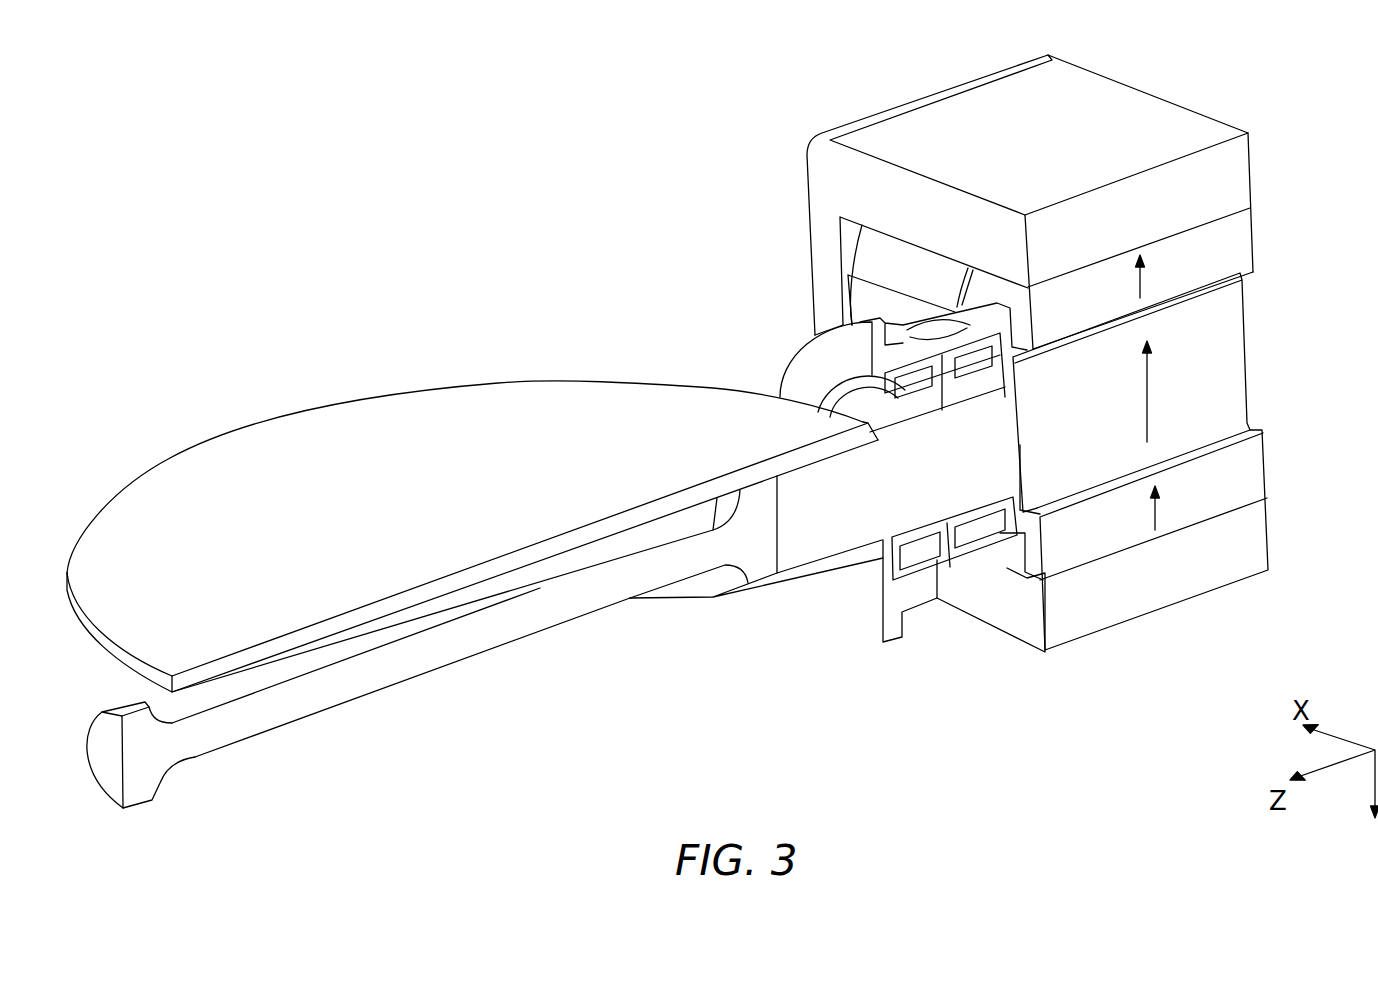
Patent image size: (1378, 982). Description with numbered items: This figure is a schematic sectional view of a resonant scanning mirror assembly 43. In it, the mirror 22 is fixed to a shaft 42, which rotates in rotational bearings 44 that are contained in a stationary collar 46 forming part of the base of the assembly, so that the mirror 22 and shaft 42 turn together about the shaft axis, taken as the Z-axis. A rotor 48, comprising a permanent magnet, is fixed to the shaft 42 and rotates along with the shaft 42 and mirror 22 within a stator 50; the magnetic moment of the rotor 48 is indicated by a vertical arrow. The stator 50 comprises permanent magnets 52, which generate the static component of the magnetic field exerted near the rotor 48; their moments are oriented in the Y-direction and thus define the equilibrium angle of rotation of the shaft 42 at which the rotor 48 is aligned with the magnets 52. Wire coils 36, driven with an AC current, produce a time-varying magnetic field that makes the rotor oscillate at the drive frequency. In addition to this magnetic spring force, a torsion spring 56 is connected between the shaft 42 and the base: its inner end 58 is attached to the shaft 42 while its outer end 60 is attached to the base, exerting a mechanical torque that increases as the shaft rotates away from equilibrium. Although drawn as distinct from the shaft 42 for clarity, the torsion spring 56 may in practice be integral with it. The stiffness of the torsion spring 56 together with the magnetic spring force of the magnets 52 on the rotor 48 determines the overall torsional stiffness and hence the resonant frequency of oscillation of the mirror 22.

The resonant scanning mirror assembly 43 is at (221, 131).
The stator 50 is at (1170, 108).
The permanent magnets 52 is at (1248, 235).
The rotor 48 is at (1246, 366).
The wire coils 36 is at (867, 259).
The mirror 22 is at (347, 400).
The shaft 42 is at (800, 555).
The inner end 58 is at (760, 578).
The torsion spring 56 is at (516, 634).
The rotational bearings 44 is at (978, 552).
The stationary collar 46 is at (880, 632).
The outer end 60 is at (140, 806).